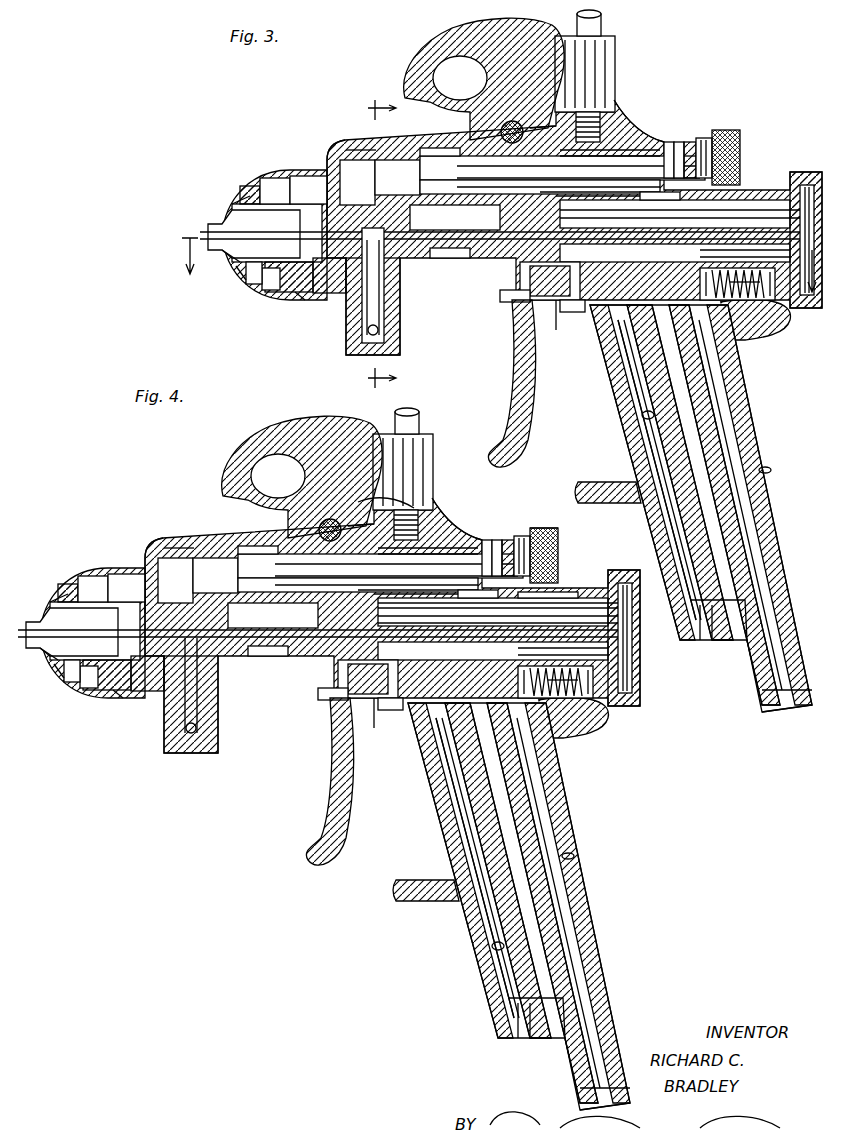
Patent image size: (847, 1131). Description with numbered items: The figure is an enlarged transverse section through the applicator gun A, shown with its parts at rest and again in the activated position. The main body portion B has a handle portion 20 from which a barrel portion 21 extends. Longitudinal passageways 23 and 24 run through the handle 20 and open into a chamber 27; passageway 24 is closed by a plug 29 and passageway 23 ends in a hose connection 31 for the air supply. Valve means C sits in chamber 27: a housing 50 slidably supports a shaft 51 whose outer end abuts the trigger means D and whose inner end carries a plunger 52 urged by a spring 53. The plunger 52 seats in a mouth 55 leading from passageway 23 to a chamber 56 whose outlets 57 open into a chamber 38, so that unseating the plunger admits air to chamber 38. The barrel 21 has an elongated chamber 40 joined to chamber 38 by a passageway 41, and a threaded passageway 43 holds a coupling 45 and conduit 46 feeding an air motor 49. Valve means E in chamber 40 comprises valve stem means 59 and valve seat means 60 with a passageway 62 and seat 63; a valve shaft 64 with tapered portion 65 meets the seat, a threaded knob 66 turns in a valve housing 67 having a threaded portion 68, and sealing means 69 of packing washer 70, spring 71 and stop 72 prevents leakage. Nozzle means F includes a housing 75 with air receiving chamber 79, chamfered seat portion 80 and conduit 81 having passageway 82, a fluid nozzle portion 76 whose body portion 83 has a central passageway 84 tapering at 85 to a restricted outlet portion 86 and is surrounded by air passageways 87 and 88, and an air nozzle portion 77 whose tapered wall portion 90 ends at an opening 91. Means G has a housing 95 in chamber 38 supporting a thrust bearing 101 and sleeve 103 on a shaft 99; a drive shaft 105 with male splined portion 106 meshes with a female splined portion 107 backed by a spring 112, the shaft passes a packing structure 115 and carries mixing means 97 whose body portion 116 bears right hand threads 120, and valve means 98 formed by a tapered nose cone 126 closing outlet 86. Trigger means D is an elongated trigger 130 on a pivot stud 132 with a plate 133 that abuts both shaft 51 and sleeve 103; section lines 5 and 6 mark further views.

In FIG. 3, the handle portion 20 is at (800, 511).
In FIG. 4, the handle portion 20 is at (519, 906).
In FIG. 3, the barrel portion 21 is at (470, 130).
In FIG. 4, the barrel portion 21 is at (292, 522).
In FIG. 3, the passageway 23 is at (772, 472).
In FIG. 4, the passageway 23 is at (556, 903).
In FIG. 3, the passageway 24 is at (643, 415).
In FIG. 4, the passageway 24 is at (448, 922).
In FIG. 3, the chamber 27 is at (745, 300).
In FIG. 4, the chamber 27 is at (564, 717).
In FIG. 3, the plug 29 is at (716, 645).
In FIG. 4, the plug 29 is at (527, 1037).
In FIG. 3, the hose connection 31 is at (760, 712).
In FIG. 4, the hose connection 31 is at (598, 1109).
In FIG. 3, the chamber 38 is at (722, 196).
In FIG. 4, the chamber 38 is at (392, 625).
In FIG. 3, the elongated chamber 40 is at (535, 134).
In FIG. 4, the elongated chamber 40 is at (363, 530).
In FIG. 3, the passageway 41 is at (634, 197).
In FIG. 4, the passageway 41 is at (428, 593).
In FIG. 3, the threaded passageway 43 is at (622, 108).
In FIG. 4, the threaded passageway 43 is at (457, 509).
In FIG. 3, the coupling 45 is at (615, 58).
In FIG. 4, the coupling 45 is at (420, 487).
In FIG. 3, the conduit 46 is at (601, 22).
In FIG. 4, the conduit 46 is at (423, 421).
In FIG. 3, the air motor 49 is at (806, 172).
In FIG. 4, the air motor 49 is at (639, 638).
In FIG. 3, the housing 50 is at (576, 312).
In FIG. 4, the housing 50 is at (397, 726).
In FIG. 3, the shaft 51 is at (560, 330).
In FIG. 4, the shaft 51 is at (336, 708).
In FIG. 3, the plunger 52 is at (705, 302).
In FIG. 4, the plunger 52 is at (547, 702).
In FIG. 3, the spring 53 is at (768, 330).
In FIG. 4, the spring 53 is at (573, 717).
In FIG. 3, the mouth 55 is at (700, 328).
In FIG. 4, the mouth 55 is at (498, 870).
In FIG. 3, the chamber 56 is at (630, 318).
In FIG. 4, the chamber 56 is at (444, 722).
In FIG. 3, the outlets 57 is at (636, 340).
In FIG. 4, the outlets 57 is at (475, 868).
In FIG. 4, the valve stem means 59 is at (549, 517).
In FIG. 3, the valve seat means 60 is at (476, 100).
In FIG. 4, the valve seat means 60 is at (302, 477).
In FIG. 3, the passageway 62 is at (397, 177).
In FIG. 4, the passageway 62 is at (215, 575).
In FIG. 3, the valve seat 63 is at (485, 150).
In FIG. 4, the valve seat 63 is at (270, 543).
In FIG. 3, the valve shaft 64 is at (566, 172).
In FIG. 4, the valve shaft 64 is at (419, 562).
In FIG. 3, the tapered portion 65 is at (457, 170).
In FIG. 4, the tapered portion 65 is at (380, 567).
In FIG. 3, the threaded knob 66 is at (738, 132).
In FIG. 4, the threaded knob 66 is at (562, 553).
In FIG. 3, the valve housing 67 is at (710, 136).
In FIG. 4, the valve housing 67 is at (535, 540).
In FIG. 3, the threaded portion 68 is at (690, 140).
In FIG. 4, the threaded portion 68 is at (523, 535).
In FIG. 3, the sealing means 69 is at (612, 172).
In FIG. 4, the sealing means 69 is at (367, 535).
In FIG. 3, the packing washer 70 is at (668, 140).
In FIG. 4, the packing washer 70 is at (500, 541).
In FIG. 3, the spring 71 is at (678, 140).
In FIG. 4, the spring 71 is at (500, 532).
In FIG. 3, the stop 72 is at (622, 182).
In FIG. 4, the stop 72 is at (418, 580).
In FIG. 3, the housing 75 is at (355, 138).
In FIG. 4, the housing 75 is at (161, 533).
In FIG. 3, the fluid nozzle portion 76 is at (242, 282).
In FIG. 4, the fluid nozzle portion 76 is at (94, 692).
In FIG. 3, the air nozzle portion 77 is at (232, 202).
In FIG. 4, the air nozzle portion 77 is at (41, 588).
In FIG. 3, the air receiving chamber 79 is at (355, 170).
In FIG. 4, the air receiving chamber 79 is at (190, 540).
In FIG. 3, the chamfered seat portion 80 is at (328, 293).
In FIG. 4, the chamfered seat portion 80 is at (147, 693).
In FIG. 3, the conduit 81 is at (400, 316).
In FIG. 4, the conduit 81 is at (206, 704).
In FIG. 3, the passageway 82 is at (378, 332).
In FIG. 4, the passageway 82 is at (223, 691).
In FIG. 3, the body portion 83 is at (322, 160).
In FIG. 4, the body portion 83 is at (141, 566).
In FIG. 3, the central passageway 84 is at (255, 285).
In FIG. 4, the central passageway 84 is at (69, 687).
In FIG. 3, the taper 85 is at (240, 262).
In FIG. 4, the taper 85 is at (87, 633).
In FIG. 3, the restricted outlet portion 86 is at (232, 256).
In FIG. 4, the restricted outlet portion 86 is at (38, 662).
In FIG. 3, the passageways 87 is at (272, 292).
In FIG. 4, the passageways 87 is at (87, 696).
In FIG. 3, the air passageways 88 is at (295, 293).
In FIG. 4, the air passageways 88 is at (107, 692).
In FIG. 3, the tapered wall portion 90 is at (266, 180).
In FIG. 4, the tapered wall portion 90 is at (85, 575).
In FIG. 3, the opening 91 is at (216, 222).
In FIG. 4, the opening 91 is at (64, 628).
In FIG. 3, the housing 95 is at (738, 256).
In FIG. 4, the housing 95 is at (493, 656).
In FIG. 3, the mixing means 97 is at (357, 182).
In FIG. 4, the mixing means 97 is at (175, 580).
In FIG. 3, the valve means 98 is at (300, 176).
In FIG. 4, the valve means 98 is at (119, 568).
In FIG. 3, the shaft 99 is at (415, 255).
In FIG. 4, the shaft 99 is at (273, 635).
In FIG. 3, the thrust bearing 101 is at (660, 194).
In FIG. 4, the thrust bearing 101 is at (478, 592).
In FIG. 3, the sleeve 103 is at (550, 275).
In FIG. 4, the sleeve 103 is at (342, 679).
In FIG. 3, the drive shaft 105 is at (785, 206).
In FIG. 4, the drive shaft 105 is at (525, 618).
In FIG. 4, the male splined portion 106 is at (525, 639).
In FIG. 4, the female splined portion 107 is at (556, 604).
In FIG. 4, the spring 112 is at (525, 608).
In FIG. 3, the packing structure 115 is at (450, 260).
In FIG. 4, the packing structure 115 is at (268, 669).
In FIG. 3, the body portion 116 is at (305, 302).
In FIG. 4, the body portion 116 is at (140, 682).
In FIG. 3, the right hand threads 120 is at (373, 285).
In FIG. 3, the tapered nose cone 126 is at (242, 188).
In FIG. 4, the tapered nose cone 126 is at (48, 576).
In FIG. 3, the trigger 130 is at (516, 400).
In FIG. 4, the trigger 130 is at (320, 781).
In FIG. 4, the pivot stud 132 is at (365, 495).
In FIG. 3, the plate 133 is at (505, 302).
In FIG. 4, the plate 133 is at (313, 715).
In FIG. 3, the section line 5- 5 is at (499, 277).
In FIG. 3, the section line 6- 6 is at (388, 243).
In FIG. 3, the applicator gun A is at (699, 57).
In FIG. 4, the applicator gun A is at (156, 433).
In FIG. 3, the main body portion B is at (768, 436).
In FIG. 4, the main body portion B is at (596, 772).
In FIG. 3, the valve means C is at (588, 330).
In FIG. 4, the valve means C is at (345, 763).
In FIG. 3, the trigger means D is at (492, 372).
In FIG. 4, the trigger means D is at (314, 852).
In FIG. 3, the valve means E is at (646, 126).
In FIG. 4, the valve means E is at (539, 499).
In FIG. 3, the nozzle means F is at (232, 146).
In FIG. 4, the nozzle means F is at (43, 509).
In FIG. 3, the means G is at (400, 262).
In FIG. 4, the means G is at (227, 678).